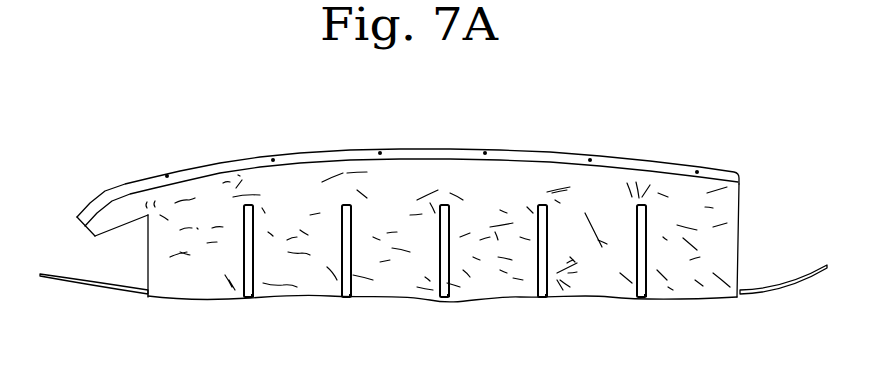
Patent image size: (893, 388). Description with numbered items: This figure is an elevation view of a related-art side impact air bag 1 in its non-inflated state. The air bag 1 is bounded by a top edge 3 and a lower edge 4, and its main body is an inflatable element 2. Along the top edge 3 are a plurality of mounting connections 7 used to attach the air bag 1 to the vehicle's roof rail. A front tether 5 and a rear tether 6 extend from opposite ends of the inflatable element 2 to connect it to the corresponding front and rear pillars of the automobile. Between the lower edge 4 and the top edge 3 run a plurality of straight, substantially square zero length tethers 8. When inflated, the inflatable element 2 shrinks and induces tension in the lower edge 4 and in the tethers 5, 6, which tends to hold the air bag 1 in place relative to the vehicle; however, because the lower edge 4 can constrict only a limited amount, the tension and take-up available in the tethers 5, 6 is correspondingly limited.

The side impact air bag 1 is at (108, 158).
The inflatable element 2 is at (148, 255).
The top edge 3 is at (332, 150).
The lower edge 4 is at (510, 300).
The front tether 5 is at (785, 290).
The rear tether 6 is at (92, 296).
The mounting connections 7 is at (380, 152).
The zero length tethers 8 is at (244, 237).